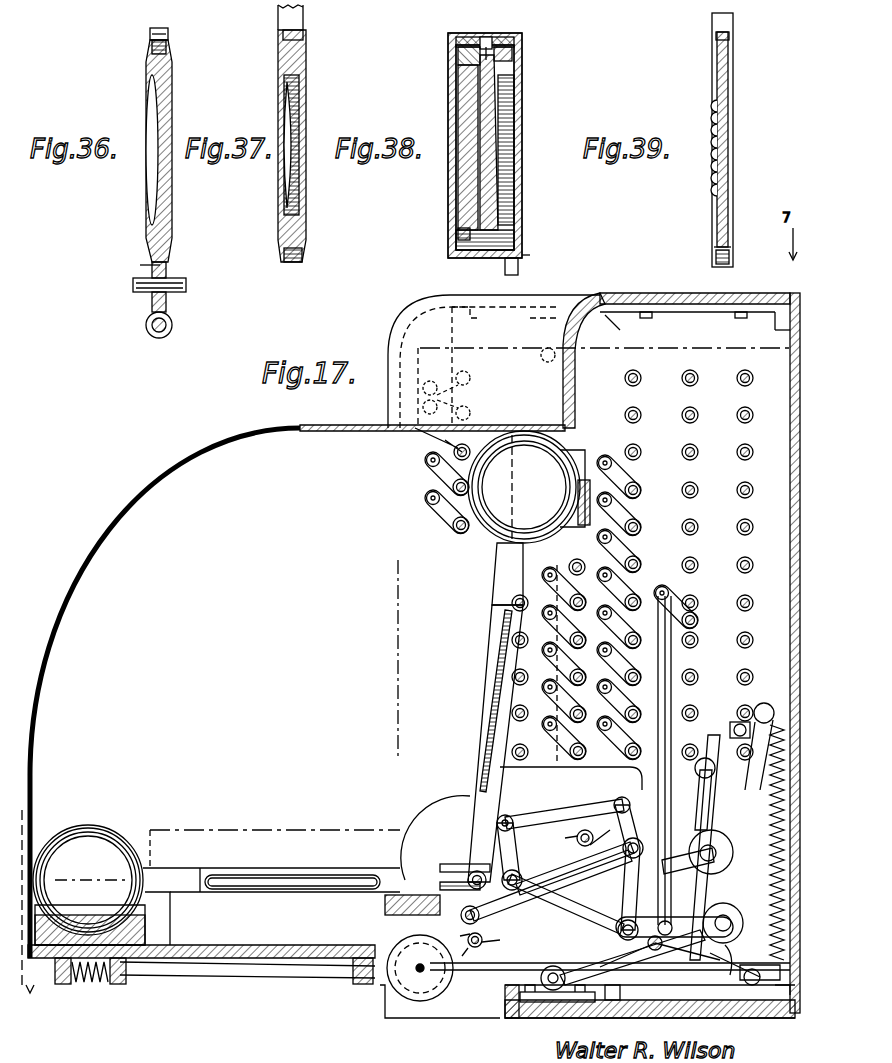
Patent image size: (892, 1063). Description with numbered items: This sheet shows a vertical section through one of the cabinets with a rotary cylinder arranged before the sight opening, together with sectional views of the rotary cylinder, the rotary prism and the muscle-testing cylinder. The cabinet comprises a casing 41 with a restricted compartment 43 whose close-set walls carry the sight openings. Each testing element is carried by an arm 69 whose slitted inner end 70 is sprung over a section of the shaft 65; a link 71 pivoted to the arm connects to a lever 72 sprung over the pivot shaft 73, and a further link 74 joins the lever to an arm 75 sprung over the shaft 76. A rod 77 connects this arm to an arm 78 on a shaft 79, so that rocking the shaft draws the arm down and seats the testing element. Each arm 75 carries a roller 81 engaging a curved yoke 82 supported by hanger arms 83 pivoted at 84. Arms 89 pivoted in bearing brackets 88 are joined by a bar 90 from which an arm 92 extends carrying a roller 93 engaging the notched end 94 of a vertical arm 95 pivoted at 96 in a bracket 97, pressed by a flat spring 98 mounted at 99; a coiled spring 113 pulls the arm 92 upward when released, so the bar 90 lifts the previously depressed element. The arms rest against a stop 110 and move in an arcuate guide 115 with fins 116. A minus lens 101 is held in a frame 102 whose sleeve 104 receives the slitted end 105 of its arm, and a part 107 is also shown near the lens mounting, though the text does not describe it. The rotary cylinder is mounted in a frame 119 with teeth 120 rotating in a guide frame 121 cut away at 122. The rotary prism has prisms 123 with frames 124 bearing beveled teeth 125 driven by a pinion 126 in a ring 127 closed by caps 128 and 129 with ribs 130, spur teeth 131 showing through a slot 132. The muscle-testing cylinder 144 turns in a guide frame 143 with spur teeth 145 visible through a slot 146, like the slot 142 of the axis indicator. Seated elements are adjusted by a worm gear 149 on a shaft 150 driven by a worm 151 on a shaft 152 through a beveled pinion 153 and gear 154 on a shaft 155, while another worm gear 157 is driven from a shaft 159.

In FIG. 17, the casing 41 is at (668, 300).
In FIG. 17, the restricted compartment 43 is at (34, 828).
In FIG. 17, the shaft 65 is at (470, 860).
In FIG. 17, the arm 69 is at (490, 690).
In FIG. 17, the slit 70 is at (445, 866).
In FIG. 17, the link 71 is at (513, 850).
In FIG. 17, the lever 72 is at (545, 820).
In FIG. 17, the pivot shaft 73 is at (600, 820).
In FIG. 17, the link 74 is at (612, 874).
In FIG. 17, the arm 75 is at (565, 920).
In FIG. 17, the shaft 76 is at (472, 950).
In FIG. 17, the rod 77 is at (672, 665).
In FIG. 17, the arm 78 is at (425, 495).
In FIG. 17, the shaft 79 is at (735, 445).
In FIG. 17, the roller 81 is at (694, 845).
In FIG. 17, the yoke 82 is at (705, 832).
In FIG. 17, the hanger arm 83 is at (700, 790).
In FIG. 17, the pivot 84 is at (708, 758).
In FIG. 17, the bearing bracket 88 is at (555, 1002).
In FIG. 17, the arm 89 is at (609, 994).
In FIG. 17, the bar 90 is at (660, 970).
In FIG. 17, the arm 92 is at (732, 978).
In FIG. 17, the roller 93 is at (745, 985).
In FIG. 17, the notched end 94 is at (785, 995).
In FIG. 17, the arm 95 is at (712, 1000).
In FIG. 17, the pivot 96 is at (765, 703).
In FIG. 17, the bearing bracket 97 is at (785, 720).
In FIG. 17, the flat spring 98 is at (674, 915).
In FIG. 17, the spring mounting 99 is at (740, 722).
In FIG. 17, the minus lens 101 is at (110, 858).
In FIG. 17, the frame 102 is at (100, 826).
In FIG. 17, the sleeve 104 is at (170, 866).
In FIG. 17, the slit 105 is at (145, 931).
In FIG. 17, the step 107 is at (170, 915).
In FIG. 17, the stop 110 is at (592, 490).
In FIG. 17, the coiled spring 113 is at (665, 1020).
In FIG. 17, the arcuate guide 115 is at (385, 905).
In FIG. 17, the fin 116 is at (445, 800).
In FIG. 36, the frame 119 is at (172, 228).
In FIG. 37, the frame 119 is at (306, 62).
In FIG. 36, the teeth 120 is at (166, 38).
In FIG. 37, the teeth 120 is at (302, 256).
In FIG. 36, the guide frame 121 is at (150, 30).
In FIG. 37, the guide frame 121 is at (303, 34).
In FIG. 36, the cut-away portion 122 is at (146, 264).
In FIG. 38, the prism 123 is at (480, 175).
In FIG. 38, the frame 124 is at (458, 100).
In FIG. 38, the beveled gear teeth 125 is at (460, 70).
In FIG. 38, the beveled pinion 126 is at (512, 68).
In FIG. 38, the ring 127 is at (505, 28).
In FIG. 38, the cap 128 is at (456, 42).
In FIG. 38, the cap 129 is at (512, 50).
In FIG. 38, the annular rib 130 is at (494, 42).
In FIG. 38, the spur gear teeth 131 is at (520, 266).
In FIG. 38, the slot 132 is at (522, 252).
In FIG. 17, the slot 142 is at (792, 480).
In FIG. 39, the guide frame 143 is at (729, 36).
In FIG. 39, the cylinder 144 is at (733, 145).
In FIG. 39, the spur teeth 145 is at (729, 262).
In FIG. 39, the slot 146 is at (714, 258).
In FIG. 36, the worm gear 149 is at (166, 300).
In FIG. 17, the worm gear 149 is at (88, 985).
In FIG. 36, the shaft 150 is at (186, 286).
In FIG. 36, the worm 151 is at (172, 328).
In FIG. 17, the worm 151 is at (100, 985).
In FIG. 17, the shaft 152 is at (200, 978).
In FIG. 17, the beveled pinion 153 is at (378, 990).
In FIG. 17, the beveled gear 154 is at (418, 1000).
In FIG. 17, the shaft 155 is at (418, 965).
In FIG. 17, the worm gear 157 is at (595, 292).
In FIG. 17, the shaft 159 is at (550, 970).